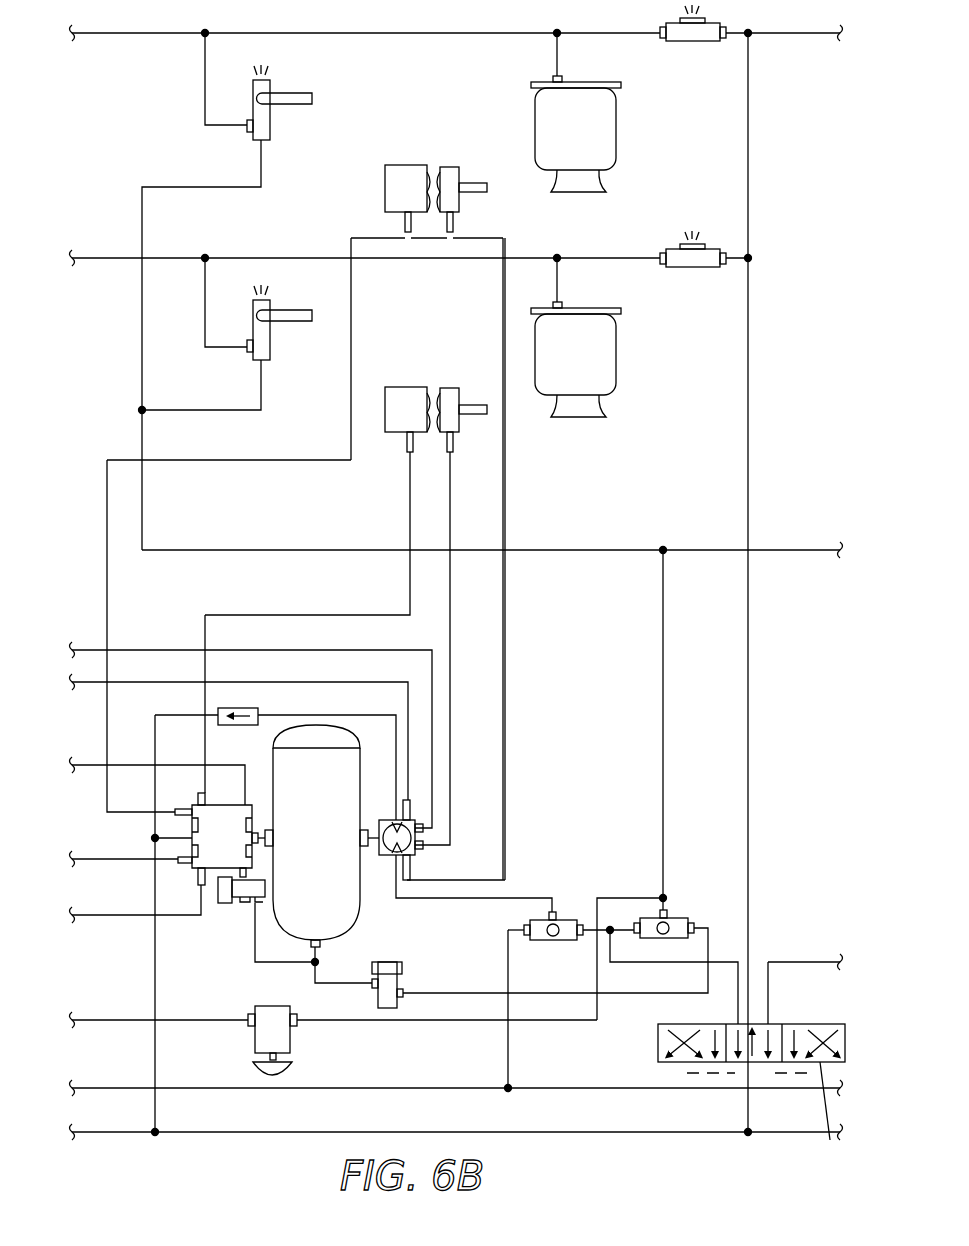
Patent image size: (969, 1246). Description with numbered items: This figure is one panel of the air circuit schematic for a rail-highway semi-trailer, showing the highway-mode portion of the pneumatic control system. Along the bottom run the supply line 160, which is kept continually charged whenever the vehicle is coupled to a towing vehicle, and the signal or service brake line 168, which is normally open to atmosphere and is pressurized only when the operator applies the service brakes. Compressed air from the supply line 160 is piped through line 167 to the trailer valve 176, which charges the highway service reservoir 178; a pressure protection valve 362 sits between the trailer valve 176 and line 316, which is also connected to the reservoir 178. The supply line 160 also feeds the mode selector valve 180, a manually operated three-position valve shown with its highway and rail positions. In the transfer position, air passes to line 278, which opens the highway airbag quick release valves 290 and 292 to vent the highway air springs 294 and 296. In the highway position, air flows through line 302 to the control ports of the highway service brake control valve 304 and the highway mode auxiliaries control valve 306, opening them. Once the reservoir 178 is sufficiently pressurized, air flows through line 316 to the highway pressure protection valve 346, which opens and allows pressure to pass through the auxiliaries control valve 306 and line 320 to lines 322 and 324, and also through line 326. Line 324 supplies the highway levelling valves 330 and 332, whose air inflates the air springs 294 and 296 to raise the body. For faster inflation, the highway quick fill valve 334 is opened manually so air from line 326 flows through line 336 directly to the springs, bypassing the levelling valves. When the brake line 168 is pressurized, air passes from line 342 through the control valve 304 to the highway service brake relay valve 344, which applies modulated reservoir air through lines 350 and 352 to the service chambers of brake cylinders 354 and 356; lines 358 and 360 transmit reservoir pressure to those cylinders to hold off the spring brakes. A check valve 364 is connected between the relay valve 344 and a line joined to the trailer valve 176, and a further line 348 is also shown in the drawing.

The supply line 160 is at (646, 1126).
The line 167 is at (147, 965).
The signal or service brake line 168 is at (451, 1085).
The trailer valve 176 is at (262, 785).
The highway service reservoir 178 is at (340, 915).
The mode selector valve 180 is at (656, 1023).
The line 278 is at (748, 436).
The highway airbag quick release valve 290 is at (680, 41).
The highway airbag quick release valve 292 is at (680, 267).
The highway air spring 294 is at (606, 106).
The highway air spring 296 is at (606, 350).
The line 302 is at (704, 963).
The highway service brake control valve 304 is at (554, 943).
The highway mode auxiliaries control valve 306 is at (670, 910).
The line 316 is at (355, 990).
The line 320 is at (663, 700).
The line 322 is at (838, 548).
The line 324 is at (532, 550).
The line 326 is at (552, 1022).
The highway levelling valve 330 is at (270, 127).
The highway levelling valve 332 is at (270, 345).
The highway quick fill valve 334 is at (290, 1043).
The line 336 is at (224, 1016).
The line 342 is at (506, 1040).
The highway service brake relay valve 344 is at (415, 860).
The highway pressure protection valve 346 is at (395, 952).
The line 348 is at (485, 980).
The line 350 is at (450, 640).
The line 352 is at (505, 472).
The brake cylinder 354 is at (456, 384).
The brake cylinder 356 is at (456, 162).
The line 358 is at (410, 505).
The line 360 is at (351, 300).
The pressure protection valve 362 is at (240, 925).
The check valve 364 is at (266, 692).